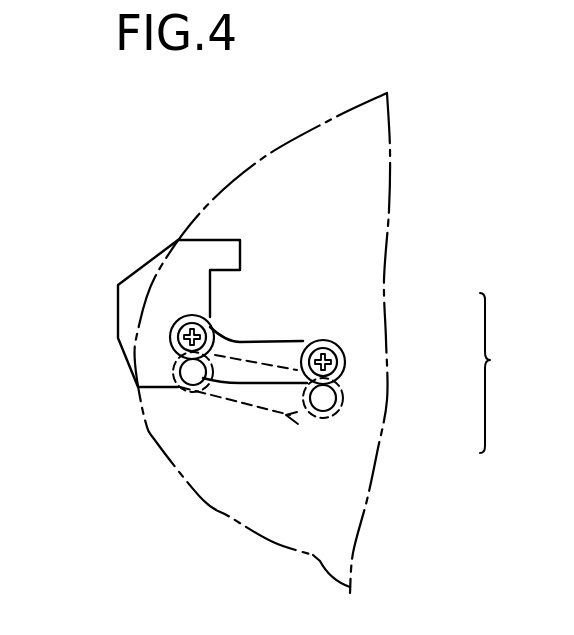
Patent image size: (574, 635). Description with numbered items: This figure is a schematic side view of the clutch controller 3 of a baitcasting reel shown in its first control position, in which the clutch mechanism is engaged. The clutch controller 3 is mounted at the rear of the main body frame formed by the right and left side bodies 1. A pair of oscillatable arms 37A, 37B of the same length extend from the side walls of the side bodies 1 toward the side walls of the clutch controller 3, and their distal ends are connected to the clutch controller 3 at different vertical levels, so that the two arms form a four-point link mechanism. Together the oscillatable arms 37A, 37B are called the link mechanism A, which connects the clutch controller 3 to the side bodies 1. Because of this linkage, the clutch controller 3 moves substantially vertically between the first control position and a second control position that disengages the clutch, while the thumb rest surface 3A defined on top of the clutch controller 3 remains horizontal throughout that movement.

The side body 1 is at (248, 168).
The clutch controller 3 is at (122, 285).
The thumb rest surface 3A is at (196, 240).
The oscillatable arm 37B is at (277, 341).
The oscillatable arm 37A is at (298, 424).
The link mechanism A is at (496, 373).